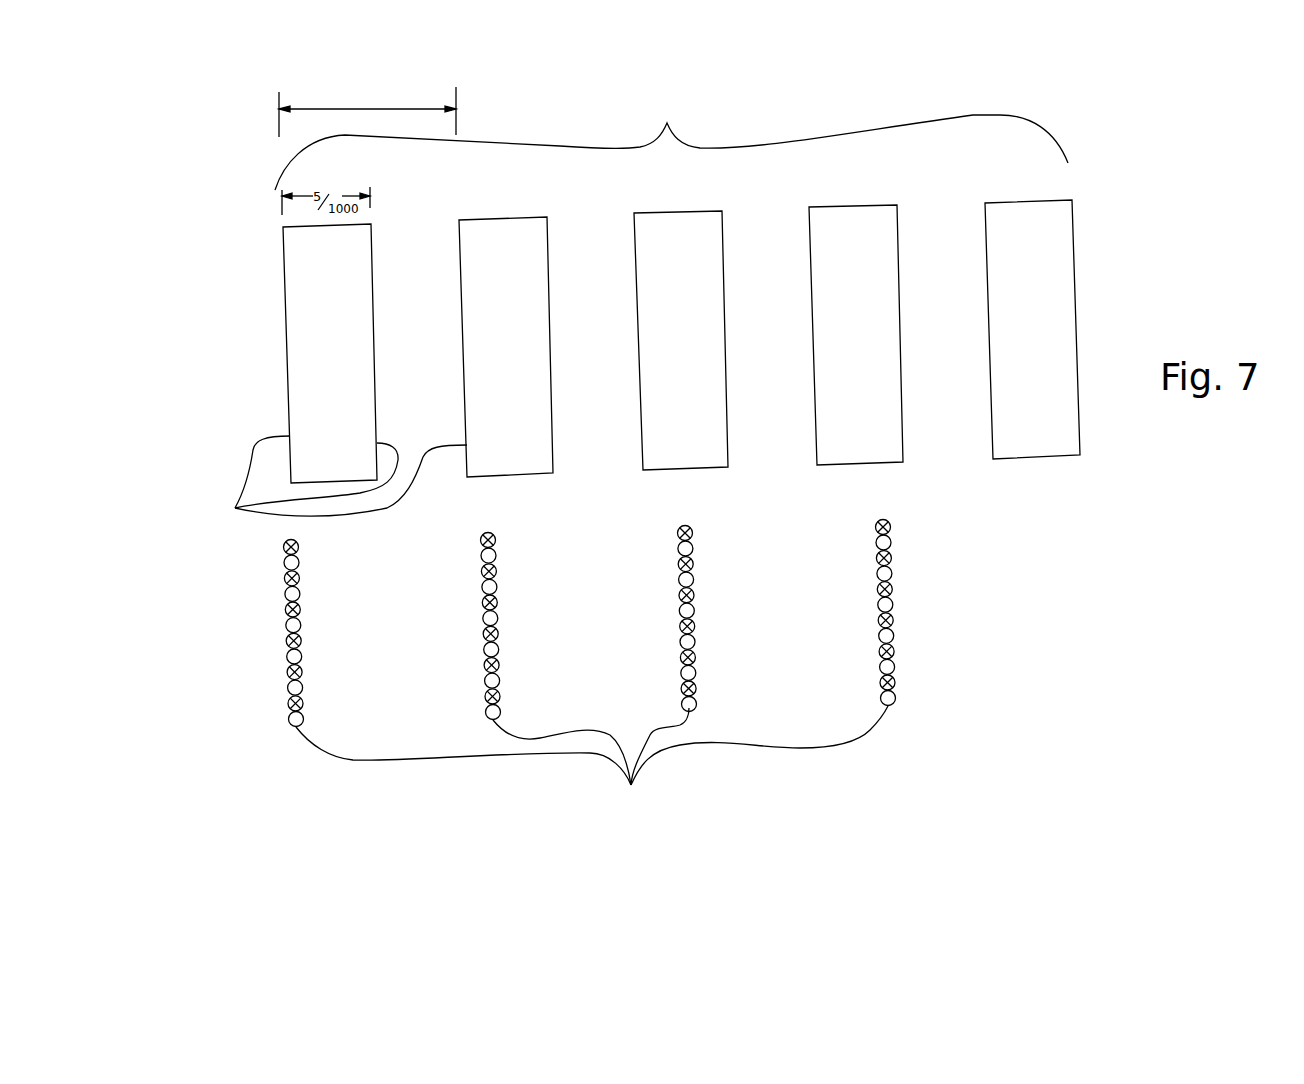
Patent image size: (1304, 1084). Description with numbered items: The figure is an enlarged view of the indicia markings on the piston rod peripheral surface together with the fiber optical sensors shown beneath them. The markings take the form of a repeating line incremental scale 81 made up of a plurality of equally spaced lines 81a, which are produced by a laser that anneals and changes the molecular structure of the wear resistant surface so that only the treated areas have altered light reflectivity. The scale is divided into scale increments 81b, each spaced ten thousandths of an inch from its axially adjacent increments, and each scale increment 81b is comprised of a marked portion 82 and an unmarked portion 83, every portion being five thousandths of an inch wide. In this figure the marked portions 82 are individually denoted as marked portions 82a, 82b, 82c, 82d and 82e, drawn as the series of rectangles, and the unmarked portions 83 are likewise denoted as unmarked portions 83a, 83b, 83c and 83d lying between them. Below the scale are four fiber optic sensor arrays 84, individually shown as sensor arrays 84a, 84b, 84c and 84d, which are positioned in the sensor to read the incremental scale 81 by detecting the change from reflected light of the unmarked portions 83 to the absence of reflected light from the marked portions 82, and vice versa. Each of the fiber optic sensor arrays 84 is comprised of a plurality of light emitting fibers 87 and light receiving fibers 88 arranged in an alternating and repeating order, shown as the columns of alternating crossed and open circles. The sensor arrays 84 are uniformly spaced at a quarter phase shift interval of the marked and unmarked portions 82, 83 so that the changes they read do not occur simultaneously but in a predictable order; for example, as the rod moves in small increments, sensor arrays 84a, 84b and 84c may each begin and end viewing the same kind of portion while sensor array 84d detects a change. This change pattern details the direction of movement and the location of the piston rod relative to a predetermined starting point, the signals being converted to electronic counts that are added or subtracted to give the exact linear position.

The incremental scale 81 is at (667, 123).
The lines 81a is at (235, 508).
The scale increment 81b is at (357, 108).
The marked portion 82 is at (676, 312).
The marked portion 82a is at (310, 290).
The marked portion 82b is at (490, 220).
The marked portion 82c is at (667, 213).
The marked portion 82d is at (858, 207).
The marked portion 82e is at (1050, 244).
The unmarked portion 83 is at (975, 440).
The unmarked portion 83a is at (410, 332).
The unmarked portion 83b is at (590, 452).
The unmarked portion 83c is at (778, 448).
The unmarked portion 83d is at (935, 443).
The fiber optic sensor arrays 84 is at (637, 666).
The sensor array 84a is at (303, 718).
The sensor array 84b is at (500, 710).
The sensor array 84c is at (697, 702).
The sensor array 84d is at (893, 700).
The light emitting fibers 87 is at (284, 549).
The light receiving fibers 88 is at (891, 527).